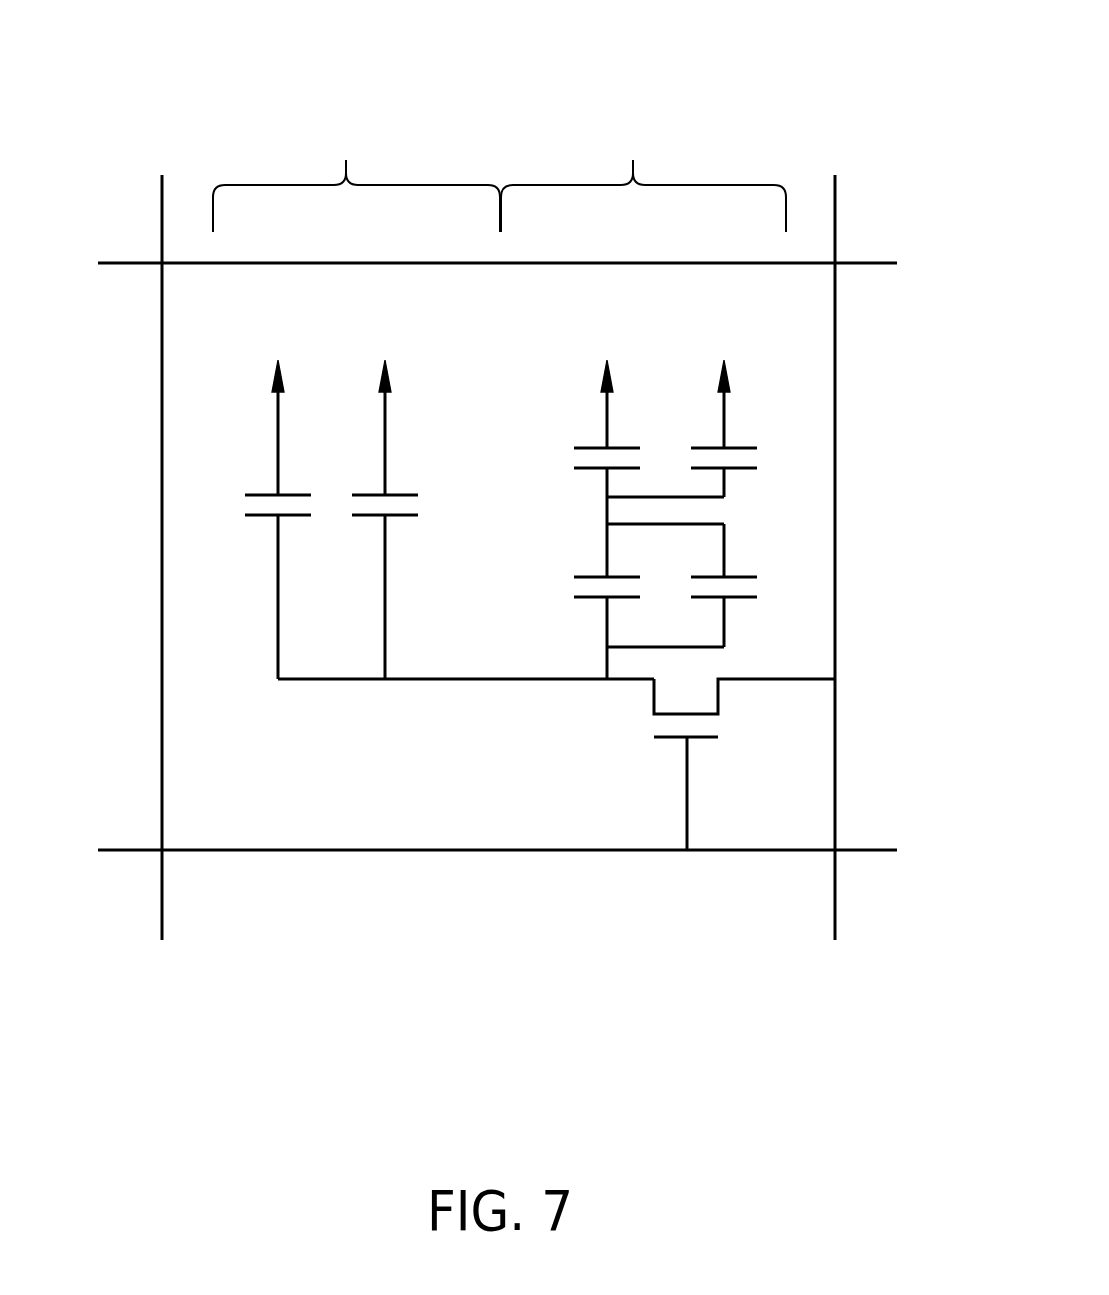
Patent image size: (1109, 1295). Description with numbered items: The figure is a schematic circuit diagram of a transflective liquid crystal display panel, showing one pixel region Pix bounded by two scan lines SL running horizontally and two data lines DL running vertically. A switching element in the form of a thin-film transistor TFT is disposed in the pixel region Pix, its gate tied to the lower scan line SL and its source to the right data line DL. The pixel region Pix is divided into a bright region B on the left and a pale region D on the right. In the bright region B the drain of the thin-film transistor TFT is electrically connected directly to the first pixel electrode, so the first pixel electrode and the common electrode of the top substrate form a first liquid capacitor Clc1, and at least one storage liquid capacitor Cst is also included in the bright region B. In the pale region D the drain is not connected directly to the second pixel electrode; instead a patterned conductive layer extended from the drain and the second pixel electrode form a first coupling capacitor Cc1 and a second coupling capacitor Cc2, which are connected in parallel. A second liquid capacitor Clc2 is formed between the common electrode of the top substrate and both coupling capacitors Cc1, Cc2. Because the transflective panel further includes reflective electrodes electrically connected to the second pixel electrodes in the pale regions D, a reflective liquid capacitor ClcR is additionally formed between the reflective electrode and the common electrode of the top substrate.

The pixel region Pix is at (735, 82).
The bright region B is at (356, 177).
The pale region D is at (643, 177).
The scan line SL is at (627, 263).
The data line DL is at (162, 495).
The first liquid capacitor Clc1 is at (259, 519).
The storage liquid capacitor Cst is at (366, 519).
The second liquid capacitor Clc2 is at (587, 428).
The reflective liquid capacitor ClcR is at (737, 428).
The first coupling capacitor Cc1 is at (587, 601).
The second coupling capacitor Cc2 is at (692, 585).
The thin-film transistor TFT is at (720, 764).